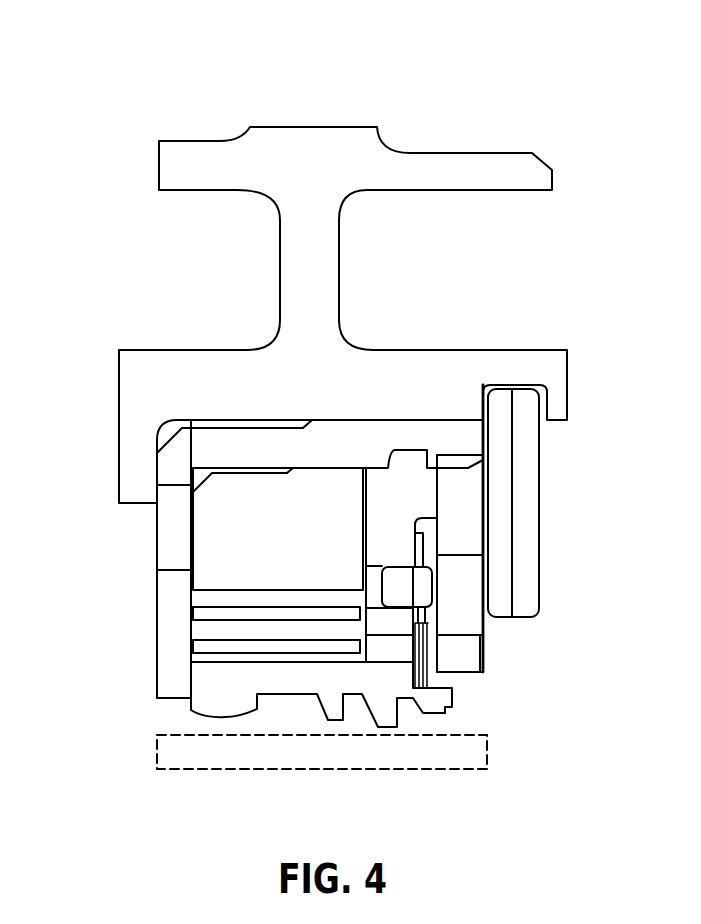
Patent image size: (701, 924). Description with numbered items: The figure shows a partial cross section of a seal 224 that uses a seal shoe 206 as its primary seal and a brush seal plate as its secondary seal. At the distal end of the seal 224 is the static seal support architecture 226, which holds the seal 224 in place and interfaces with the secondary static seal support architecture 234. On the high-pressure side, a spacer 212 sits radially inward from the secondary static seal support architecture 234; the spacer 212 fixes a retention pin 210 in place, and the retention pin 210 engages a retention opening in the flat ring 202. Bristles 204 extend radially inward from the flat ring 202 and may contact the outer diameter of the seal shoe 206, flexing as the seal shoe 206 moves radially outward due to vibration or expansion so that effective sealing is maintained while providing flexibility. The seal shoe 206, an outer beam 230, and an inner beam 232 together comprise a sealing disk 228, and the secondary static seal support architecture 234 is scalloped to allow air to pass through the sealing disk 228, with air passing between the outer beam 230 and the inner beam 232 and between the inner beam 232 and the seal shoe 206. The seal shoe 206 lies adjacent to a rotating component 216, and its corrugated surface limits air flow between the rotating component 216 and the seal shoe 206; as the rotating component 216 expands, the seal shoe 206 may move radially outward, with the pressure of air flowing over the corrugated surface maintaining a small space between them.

The seal 224 is at (483, 99).
The static seal support architecture 226 is at (425, 350).
The secondary static seal support architecture 234 is at (173, 511).
The sealing disk 228 is at (210, 560).
The outer beam 230 is at (210, 613).
The inner beam 232 is at (210, 647).
The spacer 212 is at (420, 502).
The flat ring 202 is at (420, 547).
The retention pin 210 is at (420, 589).
The bristles 204 is at (427, 683).
The seal shoe 206 is at (448, 697).
The rotating component 216 is at (472, 753).